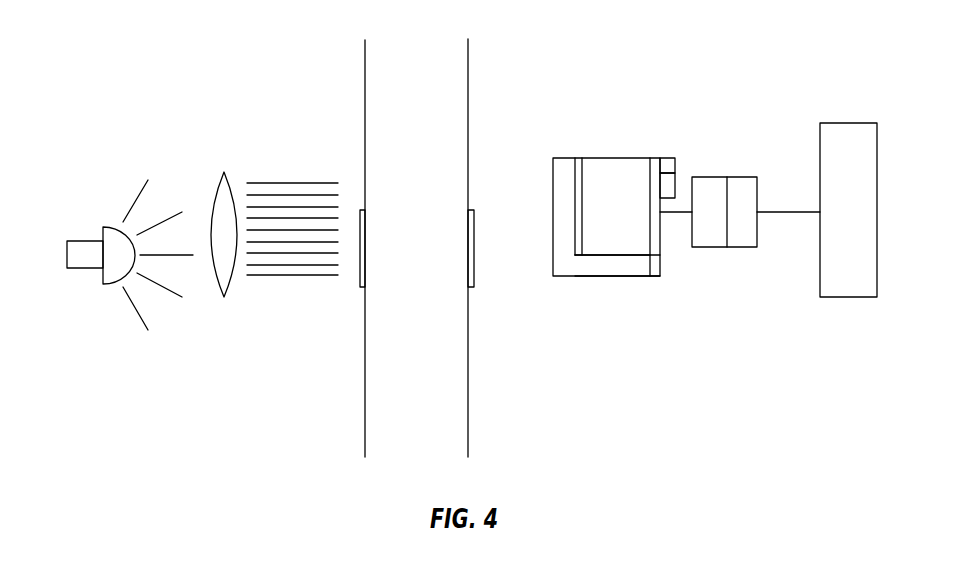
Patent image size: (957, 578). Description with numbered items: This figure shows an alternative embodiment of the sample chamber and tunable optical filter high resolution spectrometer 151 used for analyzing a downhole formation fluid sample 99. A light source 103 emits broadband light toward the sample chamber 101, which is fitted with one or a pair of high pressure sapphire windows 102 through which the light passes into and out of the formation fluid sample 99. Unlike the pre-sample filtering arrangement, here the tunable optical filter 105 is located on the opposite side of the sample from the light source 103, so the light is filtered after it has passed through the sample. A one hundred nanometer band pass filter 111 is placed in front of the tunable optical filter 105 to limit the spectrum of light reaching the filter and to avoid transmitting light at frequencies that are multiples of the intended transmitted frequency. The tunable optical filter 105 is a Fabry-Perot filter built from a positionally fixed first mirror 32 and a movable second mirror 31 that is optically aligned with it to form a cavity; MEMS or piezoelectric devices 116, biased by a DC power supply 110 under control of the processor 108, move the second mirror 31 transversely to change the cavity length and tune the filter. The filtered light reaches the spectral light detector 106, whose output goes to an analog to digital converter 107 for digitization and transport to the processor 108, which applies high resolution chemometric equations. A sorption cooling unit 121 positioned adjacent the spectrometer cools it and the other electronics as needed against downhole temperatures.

The formation fluid sample 99 is at (499, 236).
The sample chamber 101 is at (468, 158).
The high pressure sapphire windows 102 is at (360, 217).
The light source 103 is at (108, 232).
The TOF high resolution spectrometer 151 is at (345, 317).
The first mirror 32 is at (578, 160).
The tunable optical filter 105 is at (617, 168).
The second mirror 31 is at (657, 240).
The band pass filter 111 is at (612, 202).
The sorption cooling unit 121 is at (645, 272).
The MEMS or piezoelectric devices 116 is at (675, 167).
The DC power supply 110 is at (673, 182).
The analog to digital converter 107 is at (750, 216).
The spectral light detector 106 is at (720, 245).
The processor 108 is at (837, 122).